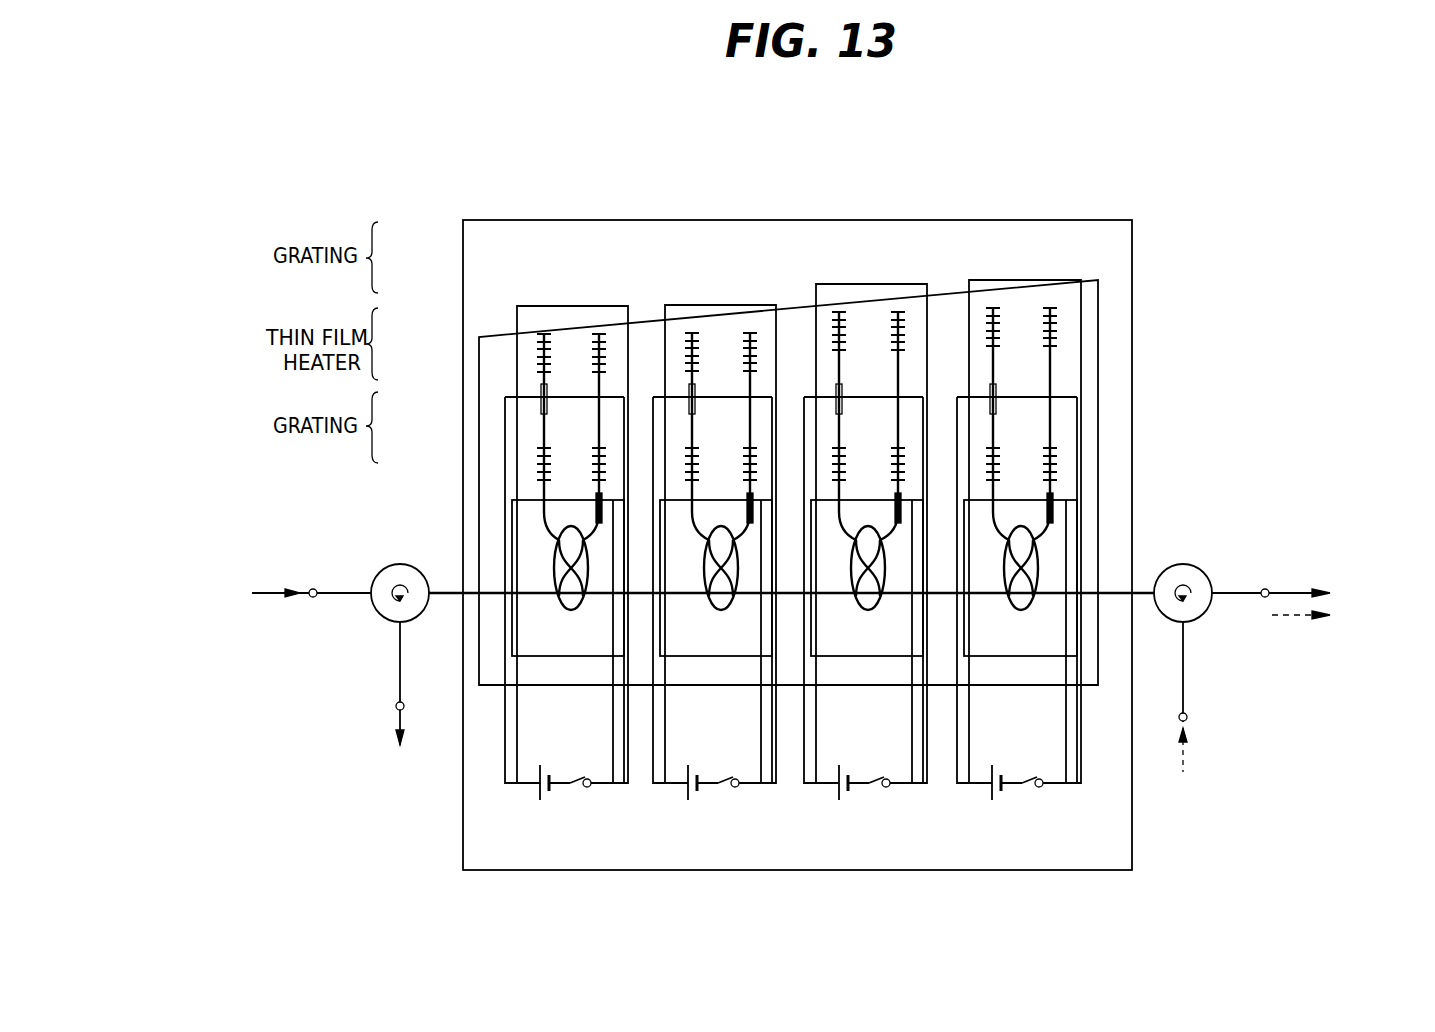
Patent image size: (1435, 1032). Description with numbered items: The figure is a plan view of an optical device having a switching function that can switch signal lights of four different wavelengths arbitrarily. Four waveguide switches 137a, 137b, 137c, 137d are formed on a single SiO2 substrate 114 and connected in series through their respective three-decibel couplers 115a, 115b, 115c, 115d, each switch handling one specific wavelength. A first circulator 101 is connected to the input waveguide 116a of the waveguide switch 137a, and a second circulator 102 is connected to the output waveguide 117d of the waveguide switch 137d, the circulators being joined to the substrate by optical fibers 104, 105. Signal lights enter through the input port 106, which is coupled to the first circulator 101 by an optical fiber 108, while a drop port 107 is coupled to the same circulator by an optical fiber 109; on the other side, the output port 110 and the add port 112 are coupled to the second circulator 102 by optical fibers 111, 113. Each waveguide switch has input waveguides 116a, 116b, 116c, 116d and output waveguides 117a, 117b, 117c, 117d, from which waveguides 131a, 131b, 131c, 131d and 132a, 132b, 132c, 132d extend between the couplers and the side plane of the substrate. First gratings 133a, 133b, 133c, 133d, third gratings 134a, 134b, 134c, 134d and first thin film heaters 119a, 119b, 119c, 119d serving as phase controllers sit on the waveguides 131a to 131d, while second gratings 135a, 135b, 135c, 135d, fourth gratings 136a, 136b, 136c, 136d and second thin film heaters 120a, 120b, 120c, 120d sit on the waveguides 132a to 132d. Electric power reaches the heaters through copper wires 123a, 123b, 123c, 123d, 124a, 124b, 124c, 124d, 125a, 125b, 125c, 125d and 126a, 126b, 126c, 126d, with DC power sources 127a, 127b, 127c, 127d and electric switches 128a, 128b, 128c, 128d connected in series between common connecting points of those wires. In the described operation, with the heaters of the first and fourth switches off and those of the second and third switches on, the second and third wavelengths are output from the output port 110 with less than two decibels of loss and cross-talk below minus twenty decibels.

The first circulator 101 is at (375, 607).
The second circulator 102 is at (1210, 610).
The optical fiber 104 is at (447, 594).
The optical fiber 105 is at (1150, 596).
The input port 106 is at (312, 588).
The drop port 107 is at (395, 708).
The optical fiber 108 is at (353, 590).
The optical fiber 109 is at (398, 650).
The output port 110 is at (1265, 588).
The optical fiber 111 is at (1222, 590).
The add port 112 is at (1188, 718).
The optical fiber 113 is at (1184, 682).
The SiO2 substrate 114 is at (1093, 300).
The 3 dB coupler 115a is at (568, 591).
The 3 dB coupler 115b is at (716, 592).
The 3 dB coupler 115c is at (867, 591).
The 3 dB coupler 115d is at (1020, 591).
The input waveguide 116a is at (540, 595).
The input waveguide 116b is at (690, 595).
The input waveguide 116c is at (838, 595).
The input waveguide 116d is at (991, 595).
The output waveguide 117a is at (597, 597).
The output waveguide 117b is at (715, 600).
The output waveguide 117c is at (893, 597).
The output waveguide 117d is at (1046, 597).
The first thin film heater 119a is at (541, 398).
The first thin film heater 119b is at (695, 398).
The first thin film heater 119c is at (842, 396).
The first thin film heater 119d is at (996, 396).
The second thin film heater 120a is at (598, 494).
The second thin film heater 120b is at (753, 512).
The second thin film heater 120c is at (902, 506).
The second thin film heater 120d is at (1054, 510).
The copper wire 123a is at (503, 760).
The copper wire 123b is at (654, 718).
The copper wire 123c is at (805, 718).
The copper wire 123d is at (958, 718).
The copper wire 124a is at (629, 757).
The copper wire 124b is at (777, 757).
The copper wire 124c is at (928, 757).
The copper wire 124d is at (1082, 760).
The copper wire 125a is at (518, 765).
The copper wire 125b is at (666, 700).
The copper wire 125c is at (817, 700).
The copper wire 125d is at (970, 700).
The copper wire 126a is at (612, 714).
The copper wire 126b is at (760, 757).
The copper wire 126c is at (911, 755).
The copper wire 126d is at (1065, 755).
The DC power source 127a is at (553, 790).
The DC power source 127b is at (705, 793).
The DC power source 127c is at (855, 793).
The DC power source 127d is at (1008, 793).
The electric switch 128a is at (588, 788).
The electric switch 128b is at (736, 788).
The electric switch 128c is at (888, 788).
The electric switch 128d is at (1042, 788).
The waveguide 131a is at (542, 498).
The waveguide 131b is at (691, 500).
The waveguide 131c is at (839, 502).
The waveguide 131d is at (993, 502).
The waveguide 132a is at (596, 525).
The waveguide 132b is at (748, 525).
The waveguide 132c is at (896, 525).
The waveguide 132d is at (1048, 525).
The first grating 133a is at (540, 466).
The first grating 133b is at (695, 448).
The first grating 133c is at (842, 448).
The first grating 133d is at (995, 448).
The third grating 134a is at (542, 333).
The third grating 134b is at (694, 330).
The third grating 134c is at (840, 310).
The third grating 134d is at (995, 306).
The second grating 135a is at (597, 458).
The second grating 135b is at (748, 450).
The second grating 135c is at (896, 450).
The second grating 135d is at (1048, 450).
The fourth grating 136a is at (597, 333).
The fourth grating 136b is at (750, 330).
The fourth grating 136c is at (892, 310).
The fourth grating 136d is at (1048, 306).
The waveguide switch 137a is at (527, 305).
The waveguide switch 137b is at (677, 305).
The waveguide switch 137c is at (826, 284).
The waveguide switch 137d is at (977, 280).